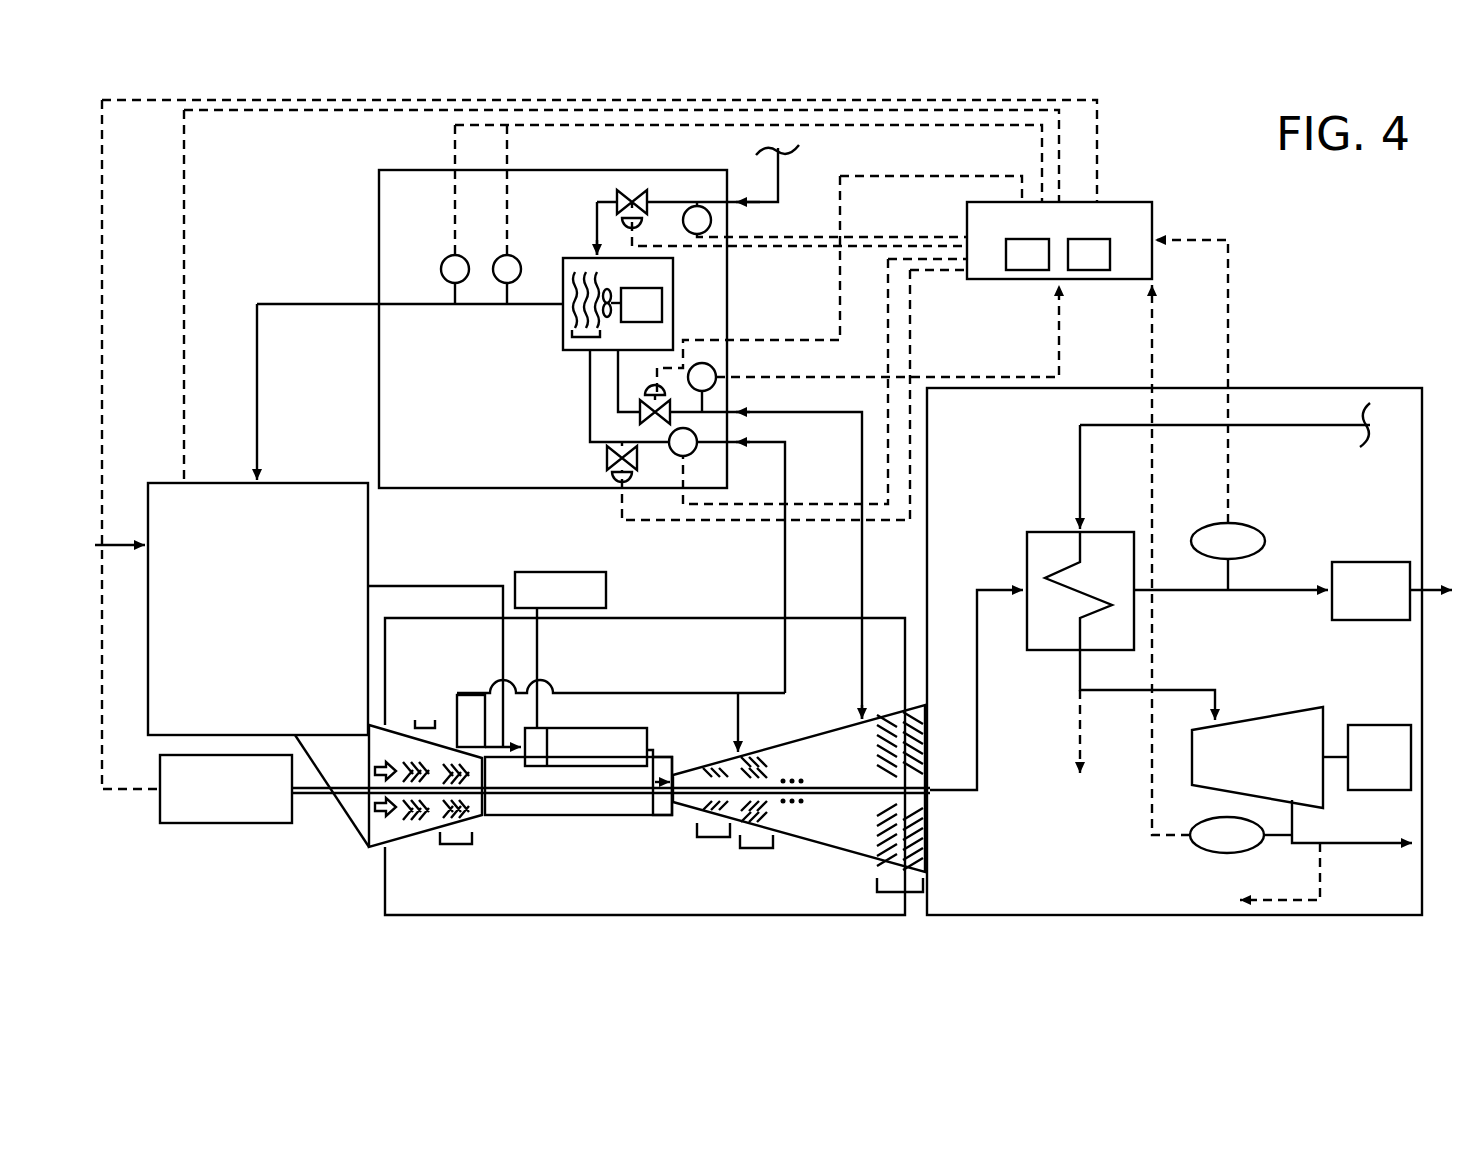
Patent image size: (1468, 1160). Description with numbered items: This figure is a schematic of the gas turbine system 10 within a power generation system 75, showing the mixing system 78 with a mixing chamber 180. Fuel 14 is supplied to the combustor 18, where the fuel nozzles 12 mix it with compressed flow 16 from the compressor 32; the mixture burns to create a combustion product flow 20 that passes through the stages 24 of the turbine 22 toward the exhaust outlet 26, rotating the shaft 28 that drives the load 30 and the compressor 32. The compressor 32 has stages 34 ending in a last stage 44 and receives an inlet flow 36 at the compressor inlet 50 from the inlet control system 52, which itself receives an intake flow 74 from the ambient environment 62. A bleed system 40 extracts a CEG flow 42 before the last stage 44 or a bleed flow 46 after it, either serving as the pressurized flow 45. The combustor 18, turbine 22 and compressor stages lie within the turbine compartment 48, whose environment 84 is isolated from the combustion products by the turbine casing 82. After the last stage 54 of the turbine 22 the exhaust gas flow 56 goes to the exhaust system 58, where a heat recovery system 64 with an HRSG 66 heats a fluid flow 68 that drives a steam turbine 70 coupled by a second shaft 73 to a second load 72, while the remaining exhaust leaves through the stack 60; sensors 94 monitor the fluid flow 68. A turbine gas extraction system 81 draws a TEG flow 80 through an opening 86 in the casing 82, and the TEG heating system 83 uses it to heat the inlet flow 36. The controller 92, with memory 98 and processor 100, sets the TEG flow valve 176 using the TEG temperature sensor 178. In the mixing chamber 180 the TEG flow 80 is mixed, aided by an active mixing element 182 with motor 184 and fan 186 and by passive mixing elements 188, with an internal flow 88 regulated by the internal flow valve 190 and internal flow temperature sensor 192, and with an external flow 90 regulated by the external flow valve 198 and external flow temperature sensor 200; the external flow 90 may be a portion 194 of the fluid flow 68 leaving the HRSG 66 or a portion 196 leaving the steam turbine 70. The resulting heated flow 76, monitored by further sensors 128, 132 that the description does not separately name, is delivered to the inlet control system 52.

The gas turbine system 10 is at (376, 920).
The fuel nozzles 12 is at (548, 728).
The fuel 14 is at (580, 572).
The compressed flow 16 is at (498, 746).
The combustor 18 is at (590, 728).
The combustion product flow 20 is at (656, 752).
The turbine 22 is at (812, 737).
The turbine stages 24 is at (713, 837).
The exhaust outlet 26 is at (932, 797).
The shaft 28 is at (610, 796).
The load 30 is at (228, 823).
The compressor 32 is at (415, 838).
The compressor stages 34 is at (425, 720).
The inlet flow 36 is at (372, 807).
The bleed system 40 is at (470, 658).
The compressor extraction gas flow 42 is at (455, 724).
The last stage of the compressor 44 is at (458, 846).
The pressurized flow 45 is at (410, 586).
The bleed flow 46 is at (497, 630).
The turbine compartment 48 is at (810, 917).
The compressor inlet 50 is at (368, 850).
The inlet control system 52 is at (148, 610).
The last stage of the turbine 54 is at (900, 893).
The exhaust gas flow 56 is at (979, 737).
The exhaust system 58 is at (1290, 388).
The stack 60 is at (1368, 562).
The ambient environment 62 is at (1443, 545).
The heat recovery system 64 is at (1024, 482).
The heat recovery steam generator 66 is at (1027, 562).
The fluid flow 68 is at (1082, 452).
The steam turbine 70 is at (1290, 710).
The second load 72 is at (1378, 725).
The second shaft 73 is at (1336, 762).
The intake flow 74 is at (115, 543).
The power generation system 75 is at (1305, 232).
The heated flow 76 is at (258, 408).
The mixing system 78 is at (518, 170).
The turbine extraction gas flow 80 is at (860, 668).
The turbine gas extraction system 81 is at (874, 670).
The turbine casing 82 is at (836, 853).
The turbine extraction gas heating system 83 is at (298, 243).
The turbine compartment environment 84 is at (655, 660).
The opening 86 is at (856, 721).
The internal flow 88 is at (785, 580).
The external flow 90 is at (782, 168).
The controller 92 is at (1152, 210).
The sensors 94 is at (1250, 528).
The memory 98 is at (1026, 271).
The processor 100 is at (1090, 271).
The flow sensor 128 is at (500, 257).
The temperature sensor 132 is at (447, 257).
The TEG flow valve 176 is at (640, 414).
The TEG temperature sensor 178 is at (716, 374).
The mixing chamber 180 is at (563, 330).
The active mixing element 182 is at (652, 279).
The motor 184 is at (662, 305).
The fan 186 is at (601, 285).
The passive mixing elements 188 is at (580, 338).
The internal flow valve 190 is at (614, 483).
The internal flow temperature sensor 192 is at (676, 460).
The portion of fluid flow exiting the HRSG 194 is at (1075, 745).
The portion of fluid flow exiting the steam turbine 196 is at (1283, 902).
The external flow valve 198 is at (620, 192).
The external flow temperature sensor 200 is at (690, 208).